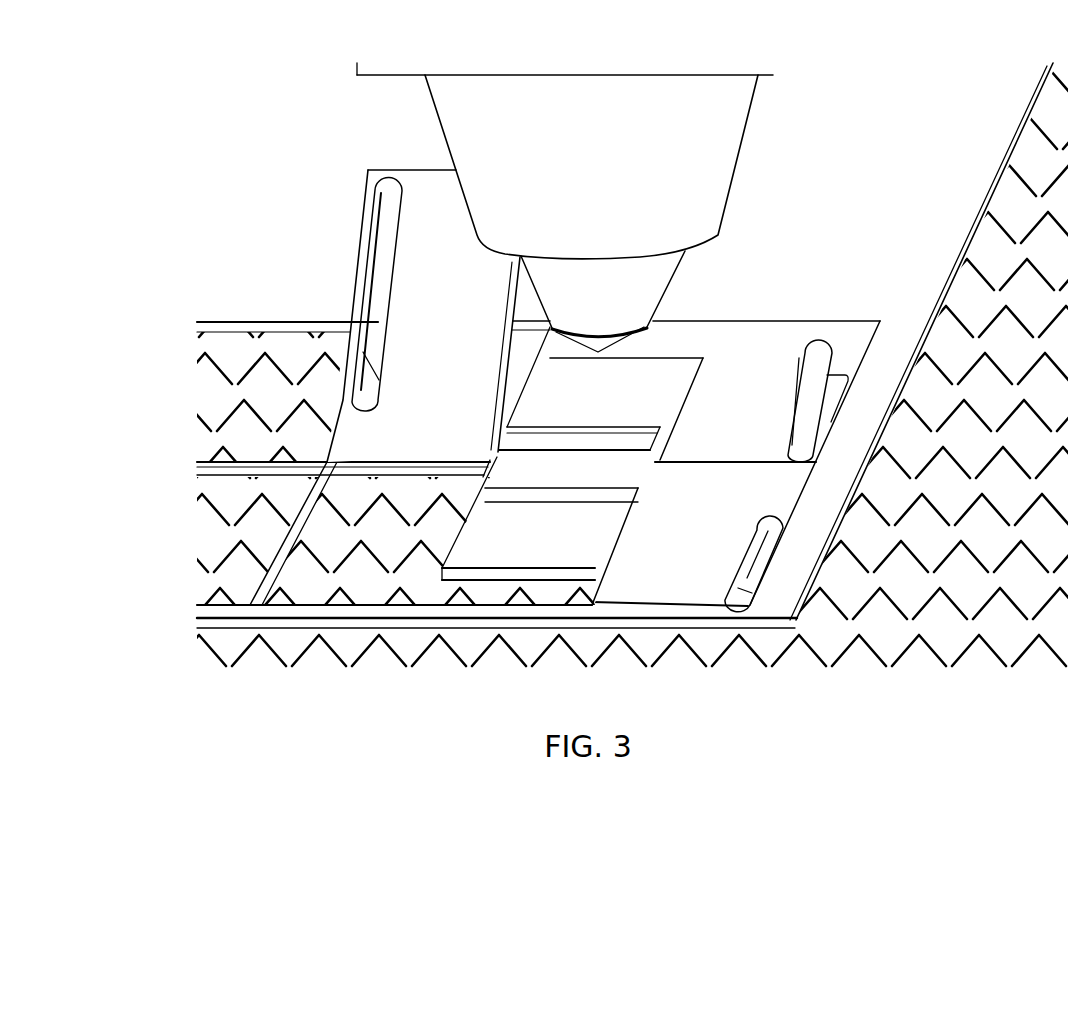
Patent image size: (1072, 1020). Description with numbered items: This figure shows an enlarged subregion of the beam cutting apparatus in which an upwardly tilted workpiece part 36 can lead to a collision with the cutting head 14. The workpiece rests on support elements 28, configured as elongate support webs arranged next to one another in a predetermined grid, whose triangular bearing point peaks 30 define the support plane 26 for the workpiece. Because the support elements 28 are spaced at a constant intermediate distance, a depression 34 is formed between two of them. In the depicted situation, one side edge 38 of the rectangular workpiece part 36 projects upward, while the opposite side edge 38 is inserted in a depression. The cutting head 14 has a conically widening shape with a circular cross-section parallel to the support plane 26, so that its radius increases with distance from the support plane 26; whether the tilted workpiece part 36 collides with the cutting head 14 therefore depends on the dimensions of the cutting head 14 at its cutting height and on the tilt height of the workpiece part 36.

The cutting head 14 is at (710, 168).
The support plane 26 is at (180, 614).
The support elements 28 is at (245, 398).
The bearing point peaks 30 is at (263, 495).
The depression 34 is at (250, 433).
The workpiece part 36 is at (367, 226).
The side edge 38 is at (400, 168).